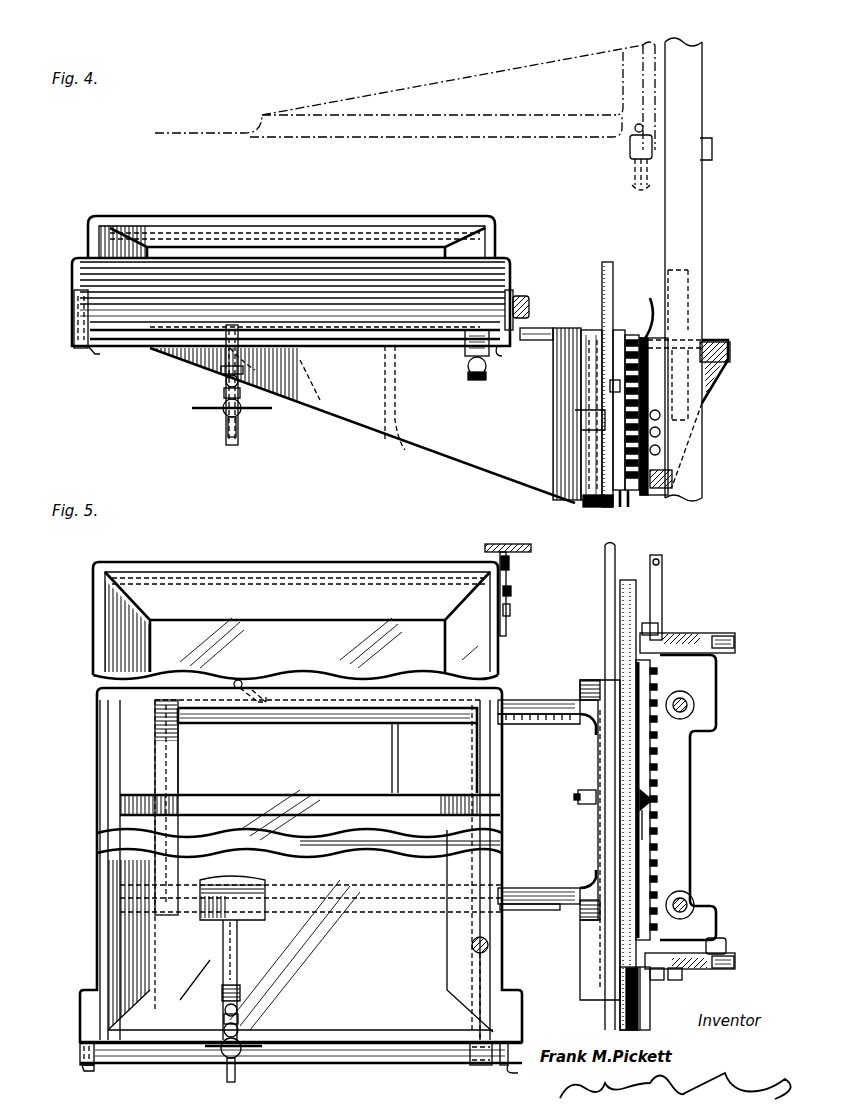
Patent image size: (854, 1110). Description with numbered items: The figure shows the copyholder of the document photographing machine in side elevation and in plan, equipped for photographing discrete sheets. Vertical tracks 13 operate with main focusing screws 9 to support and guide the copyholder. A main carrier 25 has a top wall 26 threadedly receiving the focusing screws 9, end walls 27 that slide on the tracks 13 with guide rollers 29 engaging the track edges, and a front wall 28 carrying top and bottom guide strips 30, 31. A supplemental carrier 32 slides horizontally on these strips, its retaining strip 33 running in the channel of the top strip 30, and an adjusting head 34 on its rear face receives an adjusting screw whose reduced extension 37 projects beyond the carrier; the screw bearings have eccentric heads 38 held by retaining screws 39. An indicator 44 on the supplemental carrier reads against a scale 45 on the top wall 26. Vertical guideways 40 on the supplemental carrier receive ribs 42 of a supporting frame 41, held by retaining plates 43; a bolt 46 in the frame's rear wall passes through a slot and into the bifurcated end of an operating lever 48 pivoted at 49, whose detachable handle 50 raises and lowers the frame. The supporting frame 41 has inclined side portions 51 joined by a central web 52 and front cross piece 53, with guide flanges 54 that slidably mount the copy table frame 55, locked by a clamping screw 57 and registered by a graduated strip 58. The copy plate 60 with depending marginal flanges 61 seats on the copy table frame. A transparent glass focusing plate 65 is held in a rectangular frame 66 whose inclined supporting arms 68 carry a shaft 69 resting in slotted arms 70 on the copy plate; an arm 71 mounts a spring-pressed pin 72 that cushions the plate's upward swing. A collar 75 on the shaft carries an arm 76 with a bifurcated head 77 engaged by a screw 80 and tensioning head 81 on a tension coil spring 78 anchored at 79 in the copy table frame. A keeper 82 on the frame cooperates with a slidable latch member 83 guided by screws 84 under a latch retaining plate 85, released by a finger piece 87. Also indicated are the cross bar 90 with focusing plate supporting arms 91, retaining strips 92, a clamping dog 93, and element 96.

In FIG. 4, the main focusing screw 9 is at (690, 300).
In FIG. 5, the main focusing screw 9 is at (726, 905).
In FIG. 4, the vertical track 13 is at (683, 215).
In FIG. 5, the vertical track 13 is at (695, 632).
In FIG. 4, the main carrier 25 is at (722, 412).
In FIG. 5, the main carrier 25 is at (610, 1004).
In FIG. 5, the top wall 26 is at (716, 806).
In FIG. 4, the end wall 27 is at (716, 380).
In FIG. 5, the end wall 27 is at (680, 634).
In FIG. 4, the front wall 28 is at (652, 496).
In FIG. 4, the guide roller 29 is at (690, 470).
In FIG. 5, the guide roller 29 is at (734, 642).
In FIG. 4, the top guide strip 30 is at (618, 330).
In FIG. 5, the top guide strip 30 is at (620, 984).
In FIG. 4, the bottom guide strip 31 is at (627, 507).
In FIG. 4, the supplemental carrier 32 is at (594, 506).
In FIG. 5, the supplemental carrier 32 is at (620, 950).
In FIG. 4, the retaining strip 33 is at (632, 335).
In FIG. 5, the retaining strip 33 is at (648, 764).
In FIG. 4, the adjusting head 34 is at (660, 450).
In FIG. 5, the reduced extension 37 is at (662, 590).
In FIG. 4, the eccentric head 38 is at (660, 432).
In FIG. 5, the eccentric head 38 is at (657, 980).
In FIG. 4, the retaining screw 39 is at (660, 415).
In FIG. 5, the retaining screw 39 is at (675, 980).
In FIG. 5, the vertical guideway 40 is at (588, 728).
In FIG. 4, the supporting frame 41 is at (478, 482).
In FIG. 5, the supporting frame 41 is at (551, 920).
In FIG. 5, the rib 42 is at (594, 690).
In FIG. 4, the retaining plate 43 is at (585, 448).
In FIG. 5, the retaining plate 43 is at (580, 700).
In FIG. 4, the indicator 44 is at (649, 311).
In FIG. 5, the indicator 44 is at (652, 800).
In FIG. 5, the scale 45 is at (650, 818).
In FIG. 5, the bolt 46 is at (572, 798).
In FIG. 4, the operating lever 48 is at (612, 388).
In FIG. 4, the pivot 49 is at (600, 420).
In FIG. 4, the detachable handle 50 is at (633, 276).
In FIG. 5, the detachable handle 50 is at (605, 570).
In FIG. 4, the side portion 51 is at (352, 408).
In FIG. 4, the central web 52 is at (400, 409).
In FIG. 5, the central web 52 is at (400, 764).
In FIG. 5, the front cross piece 53 is at (178, 772).
In FIG. 4, the guide flange 54 is at (540, 340).
In FIG. 5, the guide flange 54 is at (522, 700).
In FIG. 4, the copy table frame 55 is at (370, 338).
In FIG. 5, the copy table frame 55 is at (92, 770).
In FIG. 5, the clamping screw 57 is at (240, 680).
In FIG. 4, the registering strip 58 is at (568, 340).
In FIG. 5, the registering strip 58 is at (542, 724).
In FIG. 4, the copy plate 60 is at (452, 328).
In FIG. 5, the copy plate 60 is at (316, 818).
In FIG. 4, the marginal flange 61 is at (402, 330).
In FIG. 4, the transparent glass focusing plate 65 is at (192, 245).
In FIG. 5, the transparent glass focusing plate 65 is at (318, 996).
In FIG. 4, the rectangular frame 66 is at (130, 225).
In FIG. 5, the rectangular frame 66 is at (98, 940).
In FIG. 4, the supporting arm 68 is at (76, 312).
In FIG. 5, the supporting arm 68 is at (78, 1054).
In FIG. 4, the shaft 69 is at (165, 338).
In FIG. 5, the shaft 69 is at (166, 1064).
In FIG. 4, the supporting arm 70 is at (300, 361).
In FIG. 5, the supporting arm 70 is at (96, 1068).
In FIG. 4, the arm 71 is at (465, 352).
In FIG. 5, the arm 71 is at (484, 1066).
In FIG. 4, the pin 72 is at (478, 380).
In FIG. 5, the pin 72 is at (470, 955).
In FIG. 4, the collar 75 is at (221, 370).
In FIG. 5, the collar 75 is at (226, 1060).
In FIG. 4, the arm 76 is at (226, 384).
In FIG. 5, the arm 76 is at (238, 1028).
In FIG. 4, the bifurcated head 77 is at (240, 392).
In FIG. 5, the bifurcated head 77 is at (238, 1018).
In FIG. 4, the tension coil spring 78 is at (248, 368).
In FIG. 5, the tension coil spring 78 is at (222, 993).
In FIG. 5, the spring anchoring opening 79 is at (244, 892).
In FIG. 5, the screw 80 is at (237, 1008).
In FIG. 4, the tensioning head 81 is at (238, 422).
In FIG. 5, the tensioning head 81 is at (238, 1064).
In FIG. 5, the keeper 82 is at (510, 610).
In FIG. 5, the slidable latch member 83 is at (506, 580).
In FIG. 5, the retaining and guide screw 84 is at (509, 563).
In FIG. 5, the latch retaining plate 85 is at (511, 592).
In FIG. 4, the finger piece 87 is at (530, 298).
In FIG. 5, the finger piece 87 is at (508, 544).
In FIG. 4, the cross bar 90 is at (660, 130).
In FIG. 4, the focusing plate supporting arm 91 is at (437, 82).
In FIG. 4, the strip 92 is at (385, 140).
In FIG. 4, the clamping dog 93 is at (712, 148).
In FIG. 4, the clamp 96 is at (630, 147).